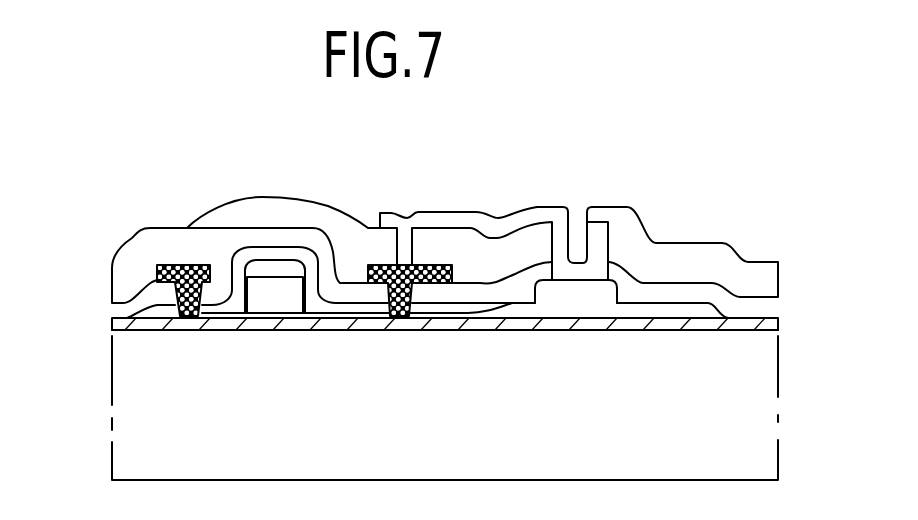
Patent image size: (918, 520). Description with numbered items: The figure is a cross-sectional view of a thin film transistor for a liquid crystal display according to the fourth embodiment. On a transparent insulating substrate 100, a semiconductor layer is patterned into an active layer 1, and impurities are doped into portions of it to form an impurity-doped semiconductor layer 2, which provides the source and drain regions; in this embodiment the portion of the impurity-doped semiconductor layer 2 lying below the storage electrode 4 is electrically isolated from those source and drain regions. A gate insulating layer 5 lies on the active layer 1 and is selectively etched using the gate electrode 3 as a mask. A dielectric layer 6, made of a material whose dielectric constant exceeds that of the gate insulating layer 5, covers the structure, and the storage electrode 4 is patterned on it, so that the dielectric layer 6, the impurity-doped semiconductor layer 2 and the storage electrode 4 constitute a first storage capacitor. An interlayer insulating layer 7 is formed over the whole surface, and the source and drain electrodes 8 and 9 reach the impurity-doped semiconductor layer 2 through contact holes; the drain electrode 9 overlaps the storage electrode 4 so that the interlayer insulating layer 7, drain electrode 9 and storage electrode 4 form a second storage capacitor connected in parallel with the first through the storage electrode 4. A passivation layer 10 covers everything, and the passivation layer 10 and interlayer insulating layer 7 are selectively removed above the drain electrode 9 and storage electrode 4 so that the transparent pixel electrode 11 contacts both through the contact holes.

The transparent insulating substrate 100 is at (758, 430).
The dielectric layer 6 is at (758, 323).
The active layer 1 is at (297, 317).
The impurity-doped semiconductor layer 2 is at (541, 324).
The gate electrode 3 is at (278, 277).
The gate insulating layer 5 is at (267, 292).
The interlayer insulating layer 7 is at (284, 247).
The source electrode 8 is at (198, 318).
The drain electrode 9 is at (400, 314).
The storage electrode 4 is at (583, 292).
The passivation layer 10 is at (757, 280).
The pixel electrode 11 is at (447, 219).